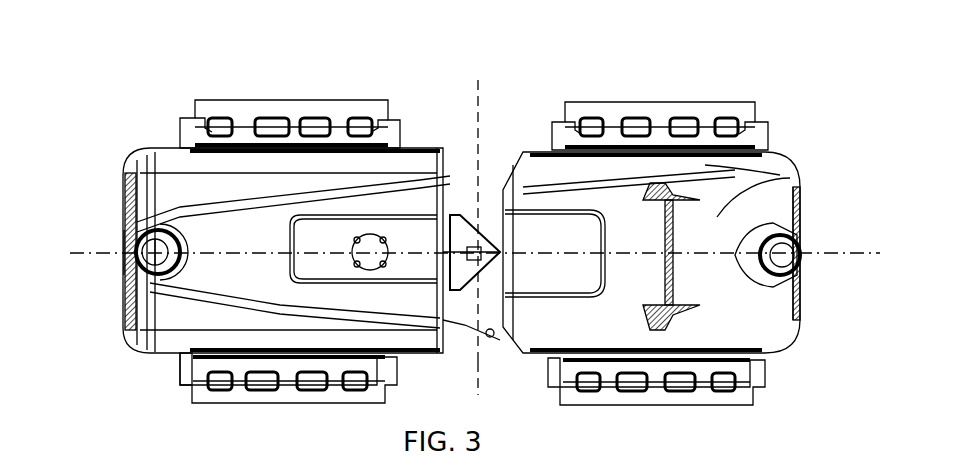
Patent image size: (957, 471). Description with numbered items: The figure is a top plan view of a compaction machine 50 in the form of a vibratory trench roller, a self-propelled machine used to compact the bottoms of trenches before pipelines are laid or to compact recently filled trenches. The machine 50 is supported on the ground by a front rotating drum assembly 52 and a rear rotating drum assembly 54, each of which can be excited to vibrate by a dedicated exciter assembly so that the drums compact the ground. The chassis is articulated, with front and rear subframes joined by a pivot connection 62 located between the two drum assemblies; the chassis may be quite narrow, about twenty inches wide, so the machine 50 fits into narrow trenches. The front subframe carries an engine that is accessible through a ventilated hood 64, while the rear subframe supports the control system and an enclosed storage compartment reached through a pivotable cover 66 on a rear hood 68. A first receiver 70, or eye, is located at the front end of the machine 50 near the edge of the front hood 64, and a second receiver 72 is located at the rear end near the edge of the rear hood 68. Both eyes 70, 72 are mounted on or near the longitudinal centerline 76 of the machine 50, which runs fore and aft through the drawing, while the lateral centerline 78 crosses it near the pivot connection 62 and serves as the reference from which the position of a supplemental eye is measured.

The compaction machine 50 is at (821, 112).
The front rotating drum assembly 52 is at (314, 100).
The rear rotating drum assembly 54 is at (620, 102).
The pivot connection 62 is at (487, 222).
The ventilated hood 64 is at (167, 195).
The pivotable cover 66 is at (790, 178).
The rear hood 68 is at (630, 195).
The first receiver 70 is at (148, 245).
The second receiver 72 is at (800, 252).
The longitudinal centerline 76 is at (77, 251).
The lateral centerline 78 is at (477, 381).